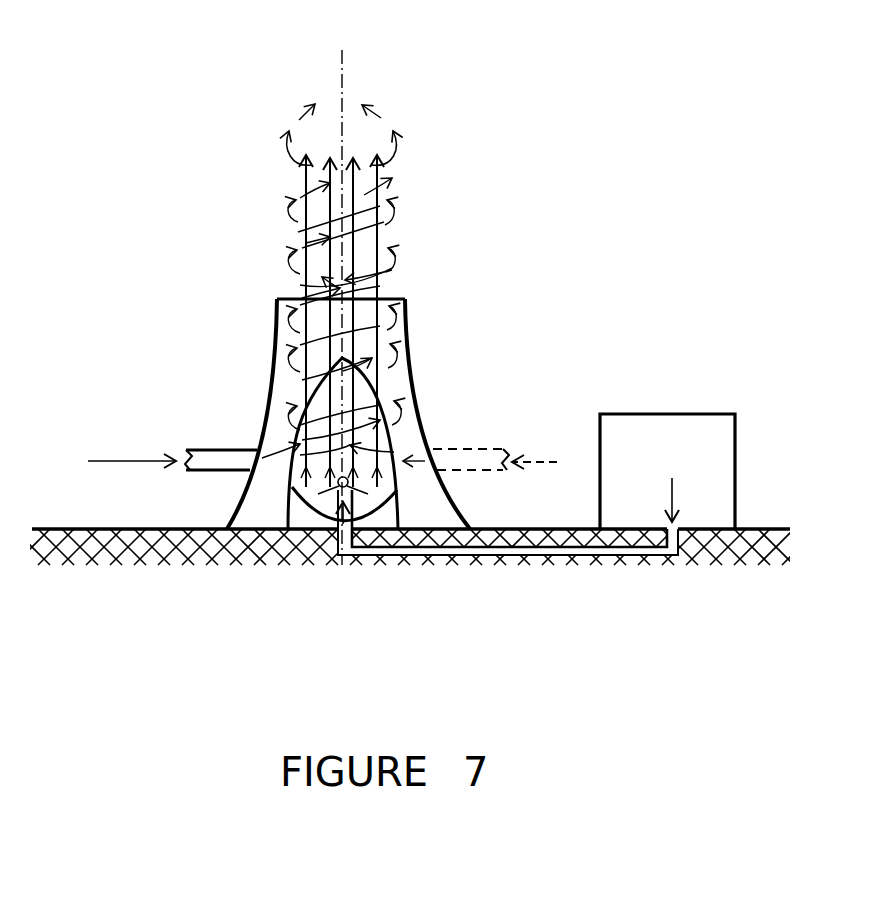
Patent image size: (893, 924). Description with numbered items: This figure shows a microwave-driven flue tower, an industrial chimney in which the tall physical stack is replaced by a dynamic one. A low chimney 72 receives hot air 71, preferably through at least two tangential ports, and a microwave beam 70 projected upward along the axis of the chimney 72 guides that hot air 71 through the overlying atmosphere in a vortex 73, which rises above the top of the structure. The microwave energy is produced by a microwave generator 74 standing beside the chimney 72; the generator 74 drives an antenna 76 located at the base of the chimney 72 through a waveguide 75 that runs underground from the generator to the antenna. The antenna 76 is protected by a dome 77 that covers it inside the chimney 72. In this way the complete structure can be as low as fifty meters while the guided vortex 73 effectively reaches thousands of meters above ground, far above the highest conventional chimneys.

The microwave beam 70 is at (378, 178).
The hot air 71 is at (123, 461).
The chimney 72 is at (413, 390).
The vortex 73 is at (391, 263).
The microwave generator 74 is at (667, 440).
The waveguide 75 is at (509, 552).
The antenna 76 is at (314, 514).
The dome 77 is at (323, 369).